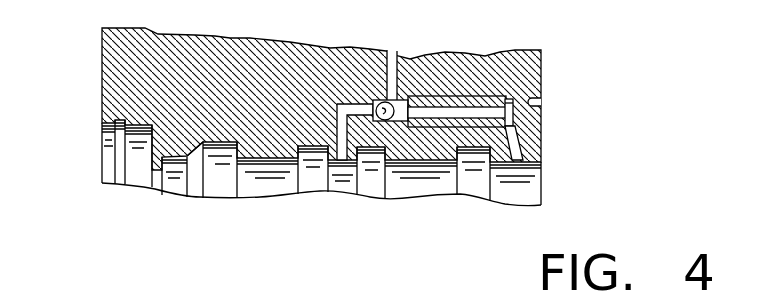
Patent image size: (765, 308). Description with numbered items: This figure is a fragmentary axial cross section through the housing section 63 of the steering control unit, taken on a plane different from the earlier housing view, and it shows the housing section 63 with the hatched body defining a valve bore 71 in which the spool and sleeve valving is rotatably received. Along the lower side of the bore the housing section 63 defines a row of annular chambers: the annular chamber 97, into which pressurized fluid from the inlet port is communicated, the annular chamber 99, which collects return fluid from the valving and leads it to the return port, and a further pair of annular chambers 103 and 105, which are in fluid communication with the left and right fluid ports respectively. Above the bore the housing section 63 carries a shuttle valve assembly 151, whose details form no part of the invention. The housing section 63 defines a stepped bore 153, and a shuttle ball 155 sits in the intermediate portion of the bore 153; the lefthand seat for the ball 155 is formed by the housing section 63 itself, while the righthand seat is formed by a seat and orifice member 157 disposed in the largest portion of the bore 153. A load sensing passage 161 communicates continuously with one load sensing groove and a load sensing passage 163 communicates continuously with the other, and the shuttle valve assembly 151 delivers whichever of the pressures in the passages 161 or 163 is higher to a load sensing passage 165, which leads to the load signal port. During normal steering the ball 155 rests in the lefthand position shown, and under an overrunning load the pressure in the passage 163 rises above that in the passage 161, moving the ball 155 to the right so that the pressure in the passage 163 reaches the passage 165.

The housing section 63 is at (118, 73).
The valve bore 71 is at (271, 160).
The annular chamber 99 is at (222, 175).
The annular chamber 103 is at (310, 175).
The annular chamber 105 is at (374, 178).
The annular chamber 97 is at (473, 180).
The load sensing passage 165 is at (383, 60).
The shuttle valve assembly 151 is at (404, 94).
The shuttle ball 155 is at (388, 122).
The seat and orifice member 157 is at (463, 96).
The stepped bore 153 is at (541, 102).
The load sensing passage 161 is at (512, 142).
The load sensing passage 163 is at (337, 114).